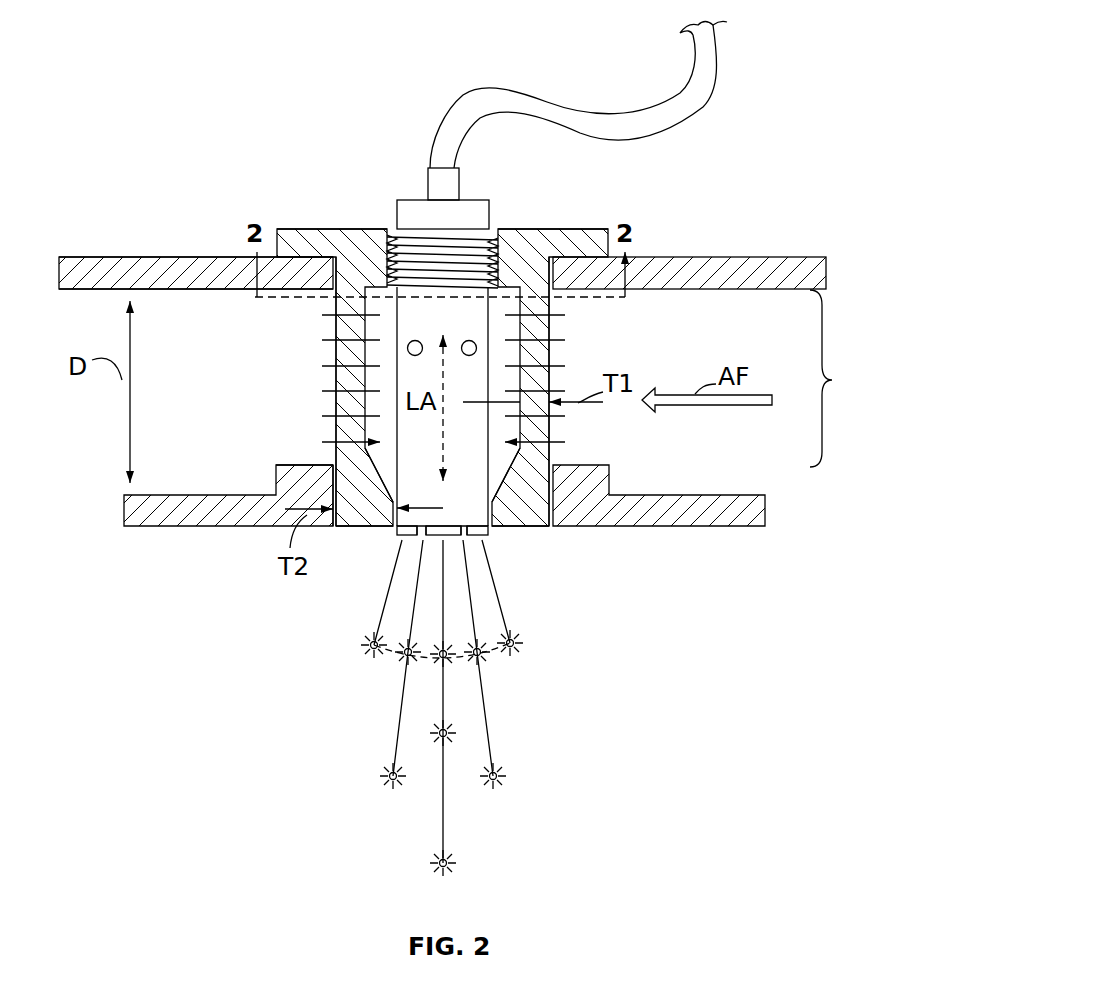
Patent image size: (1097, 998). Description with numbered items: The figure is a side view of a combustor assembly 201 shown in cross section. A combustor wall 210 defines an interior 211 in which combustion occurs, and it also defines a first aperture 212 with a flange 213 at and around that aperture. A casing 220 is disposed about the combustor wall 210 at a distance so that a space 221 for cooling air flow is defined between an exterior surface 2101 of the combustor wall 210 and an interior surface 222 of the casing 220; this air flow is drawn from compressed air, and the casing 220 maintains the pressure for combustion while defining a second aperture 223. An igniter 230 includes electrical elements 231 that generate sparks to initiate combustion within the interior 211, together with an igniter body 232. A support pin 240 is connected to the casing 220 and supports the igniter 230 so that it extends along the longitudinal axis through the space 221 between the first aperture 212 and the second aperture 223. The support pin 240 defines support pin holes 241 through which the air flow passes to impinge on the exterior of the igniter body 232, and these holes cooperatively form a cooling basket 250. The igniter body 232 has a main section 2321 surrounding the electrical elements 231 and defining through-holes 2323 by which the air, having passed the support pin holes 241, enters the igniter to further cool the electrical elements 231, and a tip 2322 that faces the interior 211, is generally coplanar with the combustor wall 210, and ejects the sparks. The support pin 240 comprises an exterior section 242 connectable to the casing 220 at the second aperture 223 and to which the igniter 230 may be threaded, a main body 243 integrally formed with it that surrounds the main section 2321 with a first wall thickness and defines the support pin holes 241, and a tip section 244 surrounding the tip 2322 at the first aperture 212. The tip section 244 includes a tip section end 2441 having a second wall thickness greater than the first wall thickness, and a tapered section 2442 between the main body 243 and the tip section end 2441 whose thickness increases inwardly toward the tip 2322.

The combustor assembly 201 is at (198, 130).
The casing 220 is at (113, 263).
The second aperture 223 is at (303, 247).
The space 221 is at (240, 334).
The interior surface 222 is at (730, 290).
The combustor wall 210 is at (133, 513).
The flange 213 is at (283, 464).
The first aperture 212 is at (333, 529).
The exterior surface 2101 is at (703, 496).
The support pin 240 is at (588, 242).
The exterior section 242 is at (342, 245).
The tip section 244 is at (376, 528).
The tapered section 2442 is at (363, 483).
The tip section end 2441 is at (533, 505).
The support pin holes 241 is at (553, 442).
The main body 243 is at (385, 346).
The igniter 230 is at (470, 198).
The electrical elements 231 is at (440, 197).
The igniter body 232 is at (418, 370).
The through-holes 2323 is at (407, 348).
The main section 2321 is at (473, 500).
The tip 2322 is at (483, 538).
The interior 211 is at (388, 836).
The cooling basket 250 is at (762, 378).